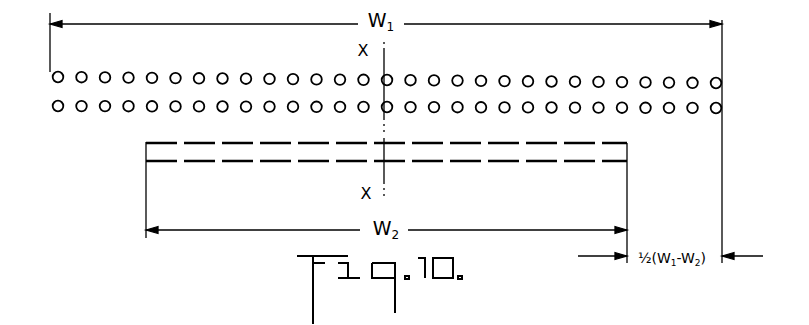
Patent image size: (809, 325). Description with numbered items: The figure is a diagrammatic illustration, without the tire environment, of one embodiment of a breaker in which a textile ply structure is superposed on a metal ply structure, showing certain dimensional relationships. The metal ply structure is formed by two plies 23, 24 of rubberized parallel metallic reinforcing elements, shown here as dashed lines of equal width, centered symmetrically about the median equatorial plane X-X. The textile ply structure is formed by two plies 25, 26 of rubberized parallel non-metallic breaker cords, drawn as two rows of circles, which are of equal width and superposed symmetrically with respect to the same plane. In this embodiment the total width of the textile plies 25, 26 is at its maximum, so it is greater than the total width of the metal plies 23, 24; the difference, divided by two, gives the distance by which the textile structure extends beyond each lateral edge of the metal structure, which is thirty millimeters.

The inner metallic ply 23 is at (195, 164).
The outer metallic ply 24 is at (160, 142).
The textile ply 25 is at (82, 112).
The textile ply 26 is at (131, 73).